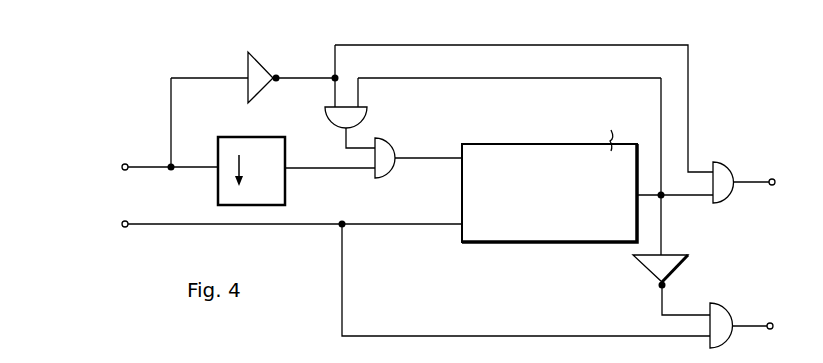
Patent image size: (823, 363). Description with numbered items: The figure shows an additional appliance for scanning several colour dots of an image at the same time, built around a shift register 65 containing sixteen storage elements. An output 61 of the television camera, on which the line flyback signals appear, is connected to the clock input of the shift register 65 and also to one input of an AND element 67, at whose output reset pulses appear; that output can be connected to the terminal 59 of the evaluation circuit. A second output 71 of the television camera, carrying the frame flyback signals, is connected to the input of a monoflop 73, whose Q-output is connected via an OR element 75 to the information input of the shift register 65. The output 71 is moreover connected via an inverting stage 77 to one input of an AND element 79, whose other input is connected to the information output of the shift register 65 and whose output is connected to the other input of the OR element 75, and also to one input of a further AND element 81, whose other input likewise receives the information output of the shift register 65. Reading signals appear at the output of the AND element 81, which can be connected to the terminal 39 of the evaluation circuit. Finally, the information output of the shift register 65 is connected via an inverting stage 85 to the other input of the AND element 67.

The output 71 is at (158, 167).
The output 61 is at (280, 224).
The inverting stage 77 is at (255, 70).
The monoflop 73 is at (232, 145).
The AND element 79 is at (331, 110).
The OR element 75 is at (382, 143).
The shift register 65 is at (556, 207).
The AND element 81 is at (720, 170).
The terminal 39 is at (767, 182).
The inverting stage 85 is at (670, 262).
The AND element 67 is at (720, 318).
The terminal 59 is at (767, 326).